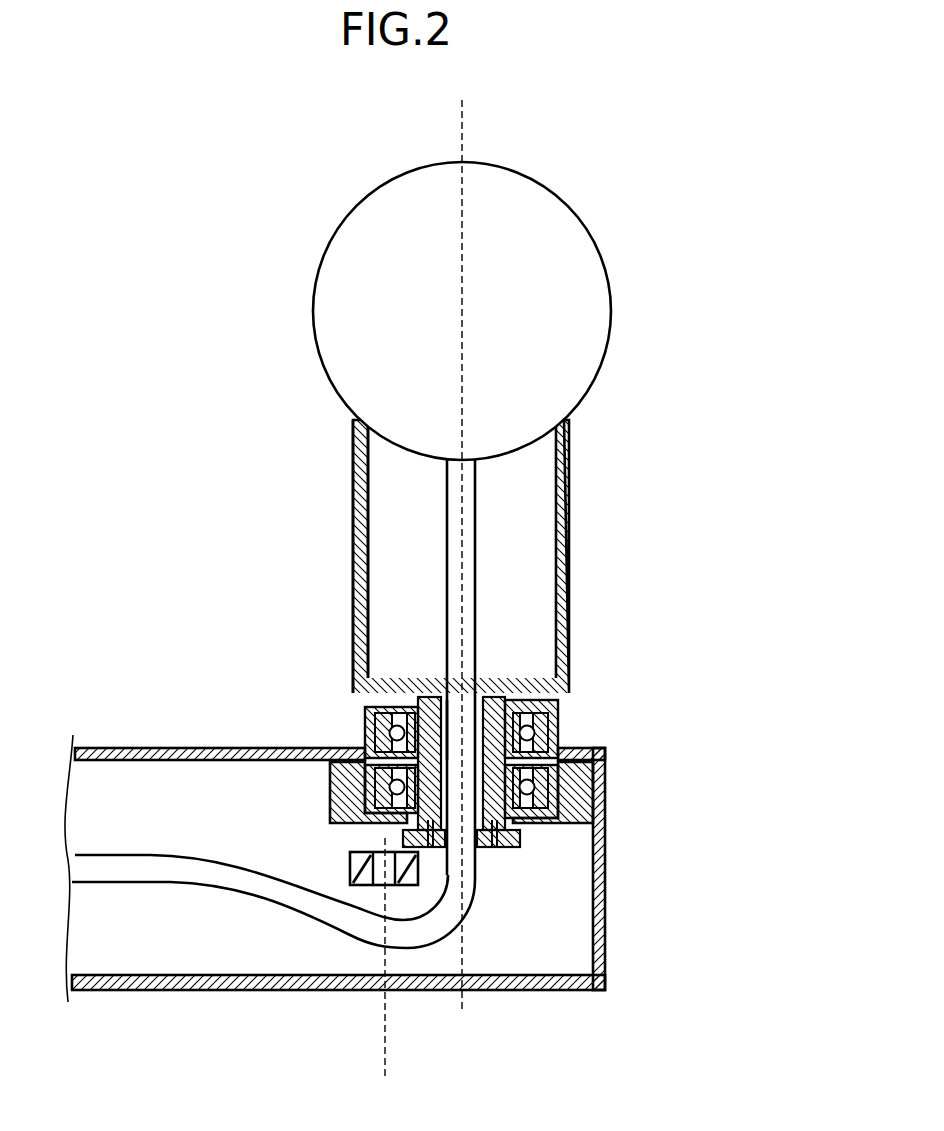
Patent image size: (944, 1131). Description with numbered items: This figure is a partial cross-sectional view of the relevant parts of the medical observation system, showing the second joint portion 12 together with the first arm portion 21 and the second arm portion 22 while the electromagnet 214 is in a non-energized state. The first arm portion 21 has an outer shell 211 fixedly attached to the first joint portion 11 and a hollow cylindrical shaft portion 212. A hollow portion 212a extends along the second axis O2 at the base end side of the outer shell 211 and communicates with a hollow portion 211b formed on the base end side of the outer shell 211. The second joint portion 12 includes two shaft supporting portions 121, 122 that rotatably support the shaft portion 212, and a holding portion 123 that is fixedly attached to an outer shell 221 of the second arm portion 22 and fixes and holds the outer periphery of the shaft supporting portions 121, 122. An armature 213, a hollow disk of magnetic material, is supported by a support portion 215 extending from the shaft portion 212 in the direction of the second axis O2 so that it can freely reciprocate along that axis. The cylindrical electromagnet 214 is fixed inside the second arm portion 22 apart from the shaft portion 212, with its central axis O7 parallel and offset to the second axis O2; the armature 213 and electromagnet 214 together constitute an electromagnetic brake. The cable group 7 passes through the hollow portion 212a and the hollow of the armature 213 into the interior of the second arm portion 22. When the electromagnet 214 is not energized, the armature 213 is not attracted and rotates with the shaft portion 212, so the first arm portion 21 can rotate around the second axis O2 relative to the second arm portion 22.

The first joint portion 11 is at (592, 229).
The first arm portion 21 is at (461, 556).
The outer shell 211 is at (353, 573).
The hollow portion 211b is at (487, 683).
The shaft portion 212 is at (428, 705).
The hollow portion 212a is at (446, 747).
The second joint portion 12 is at (531, 751).
The shaft supporting portion 121 is at (538, 724).
The shaft supporting portion 122 is at (542, 778).
The holding portion 123 is at (583, 818).
The armature 213 is at (520, 836).
The electromagnet 214 is at (363, 860).
The support portion 215 is at (407, 833).
The second arm portion 22 is at (392, 837).
The outer shell 221 is at (168, 757).
The cable group 7 is at (110, 853).
The second axis O2 is at (464, 121).
The central axis O7 is at (383, 1060).